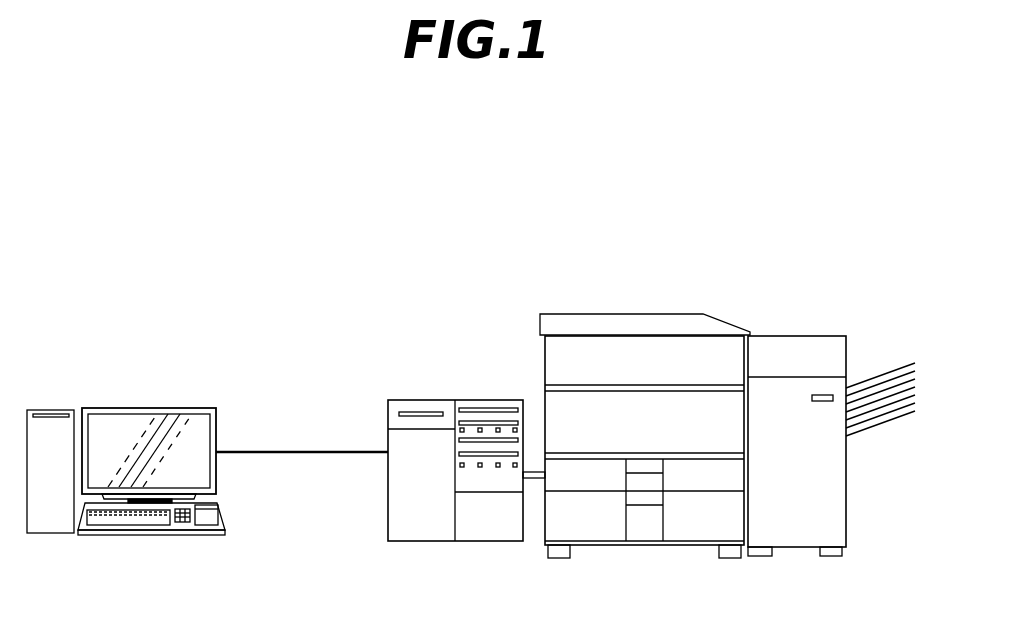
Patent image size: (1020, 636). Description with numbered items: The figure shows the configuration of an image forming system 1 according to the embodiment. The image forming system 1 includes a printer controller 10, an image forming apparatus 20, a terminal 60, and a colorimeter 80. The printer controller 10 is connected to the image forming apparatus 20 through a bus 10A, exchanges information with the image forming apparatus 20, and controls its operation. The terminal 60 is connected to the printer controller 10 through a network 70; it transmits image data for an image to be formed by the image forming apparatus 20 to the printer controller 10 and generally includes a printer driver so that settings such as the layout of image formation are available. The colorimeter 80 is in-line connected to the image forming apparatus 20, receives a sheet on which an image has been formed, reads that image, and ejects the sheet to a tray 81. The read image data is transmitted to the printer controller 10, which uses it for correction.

The image forming system 1 is at (554, 216).
The printer controller 10 is at (468, 541).
The bus 10A is at (537, 470).
The image forming apparatus 20 is at (636, 313).
The terminal 60 is at (140, 408).
The network 70 is at (312, 455).
The colorimeter 80 is at (793, 548).
The tray 81 is at (884, 364).